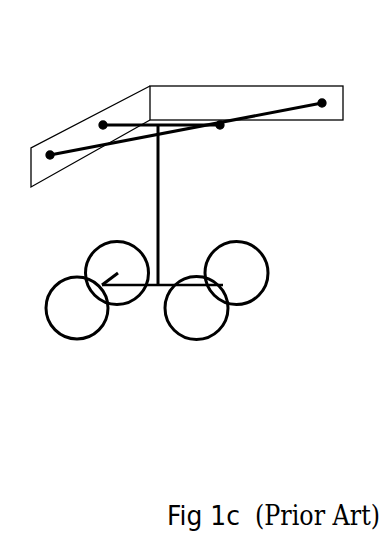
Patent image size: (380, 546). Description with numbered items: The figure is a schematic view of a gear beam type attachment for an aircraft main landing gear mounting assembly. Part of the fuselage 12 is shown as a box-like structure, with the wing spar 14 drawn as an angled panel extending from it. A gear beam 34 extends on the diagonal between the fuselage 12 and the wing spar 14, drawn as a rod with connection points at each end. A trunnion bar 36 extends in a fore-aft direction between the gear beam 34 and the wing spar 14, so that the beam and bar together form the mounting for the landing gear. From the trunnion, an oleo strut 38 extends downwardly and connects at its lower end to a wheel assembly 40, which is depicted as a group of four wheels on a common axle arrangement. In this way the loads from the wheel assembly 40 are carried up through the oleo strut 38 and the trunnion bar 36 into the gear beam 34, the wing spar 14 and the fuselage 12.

The fuselage 12 is at (172, 90).
The wing spar 14 is at (127, 110).
The gear beam 34 is at (270, 112).
The trunnion bar 36 is at (187, 123).
The oleo strut 38 is at (158, 190).
The wheel assembly 40 is at (288, 250).